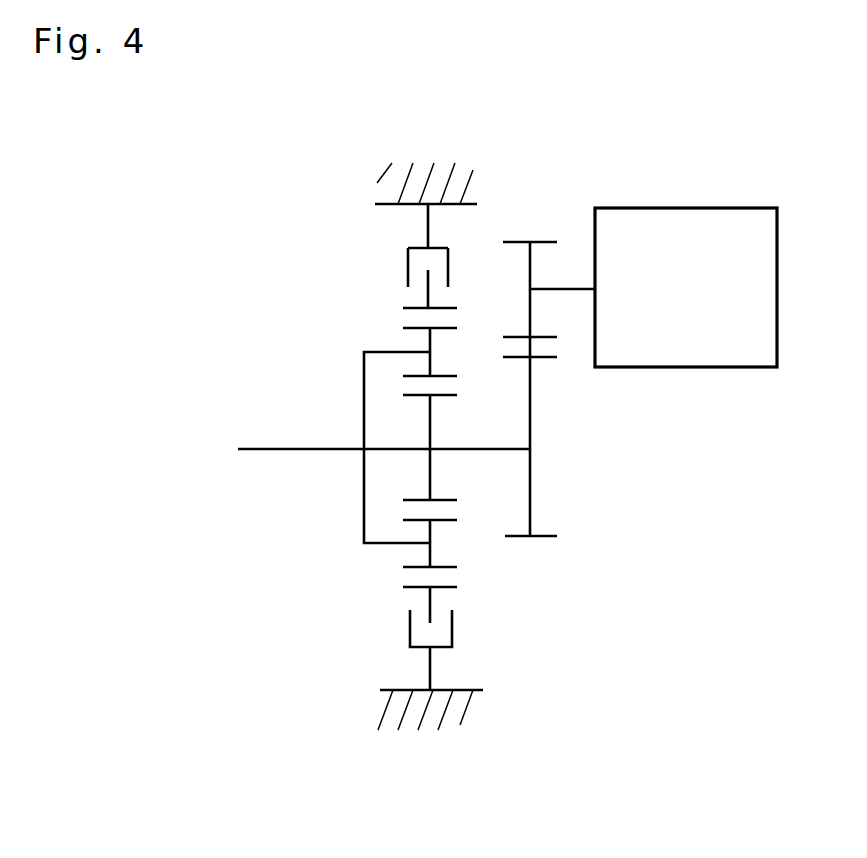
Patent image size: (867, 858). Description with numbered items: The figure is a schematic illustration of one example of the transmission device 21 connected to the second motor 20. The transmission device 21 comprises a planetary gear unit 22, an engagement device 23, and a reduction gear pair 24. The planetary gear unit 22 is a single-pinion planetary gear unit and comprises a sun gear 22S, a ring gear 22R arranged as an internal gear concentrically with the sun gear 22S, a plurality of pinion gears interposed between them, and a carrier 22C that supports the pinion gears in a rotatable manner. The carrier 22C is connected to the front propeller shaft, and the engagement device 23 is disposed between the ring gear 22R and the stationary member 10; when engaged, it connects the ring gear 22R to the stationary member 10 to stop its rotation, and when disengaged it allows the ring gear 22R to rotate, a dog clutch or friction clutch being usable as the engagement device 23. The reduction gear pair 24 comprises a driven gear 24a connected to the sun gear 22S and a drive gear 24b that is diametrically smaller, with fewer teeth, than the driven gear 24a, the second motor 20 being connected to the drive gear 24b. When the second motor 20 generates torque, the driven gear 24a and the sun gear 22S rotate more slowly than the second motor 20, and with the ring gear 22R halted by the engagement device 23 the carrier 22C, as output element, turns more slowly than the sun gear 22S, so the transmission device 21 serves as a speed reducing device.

The stationary member 10 is at (432, 182).
The second motor 20 is at (692, 207).
The transmission device 21 is at (353, 665).
The planetary gear unit 22 is at (376, 374).
The ring gear 22R is at (407, 310).
The carrier 22C is at (363, 385).
The sun gear 22S is at (415, 397).
The engagement device 23 is at (453, 626).
The reduction gear pair 24 is at (588, 388).
The driven gear 24a is at (548, 540).
The drive gear 24b is at (540, 240).